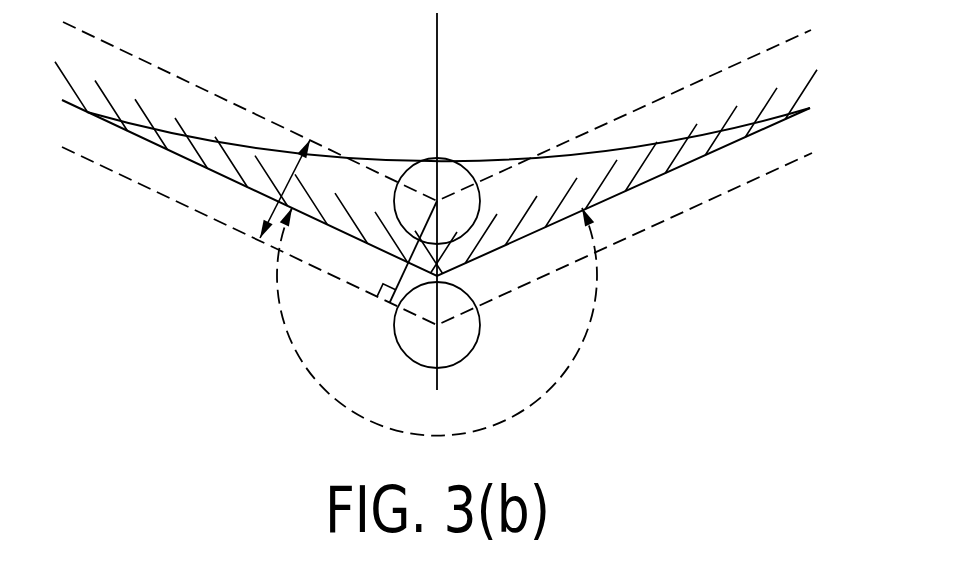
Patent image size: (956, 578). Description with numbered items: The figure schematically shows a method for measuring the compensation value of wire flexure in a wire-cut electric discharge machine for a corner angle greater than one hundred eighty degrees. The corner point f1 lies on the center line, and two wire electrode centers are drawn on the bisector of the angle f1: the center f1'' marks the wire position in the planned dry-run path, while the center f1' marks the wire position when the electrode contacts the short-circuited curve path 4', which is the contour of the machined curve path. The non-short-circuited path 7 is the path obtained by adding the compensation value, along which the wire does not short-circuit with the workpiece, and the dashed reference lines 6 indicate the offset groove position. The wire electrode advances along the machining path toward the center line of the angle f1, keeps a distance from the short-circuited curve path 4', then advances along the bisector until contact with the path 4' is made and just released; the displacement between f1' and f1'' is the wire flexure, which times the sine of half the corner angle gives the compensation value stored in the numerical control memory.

The short-circuited curve path 4' is at (436, 147).
The non-short-circuited path 7 is at (548, 152).
The reference groove surface line 6 is at (188, 208).
The corner-part angle position f1 is at (510, 314).
The wire electrode center at short circuit f1' is at (556, 276).
The wire electrode center in planned dry-run path f1'' is at (494, 359).